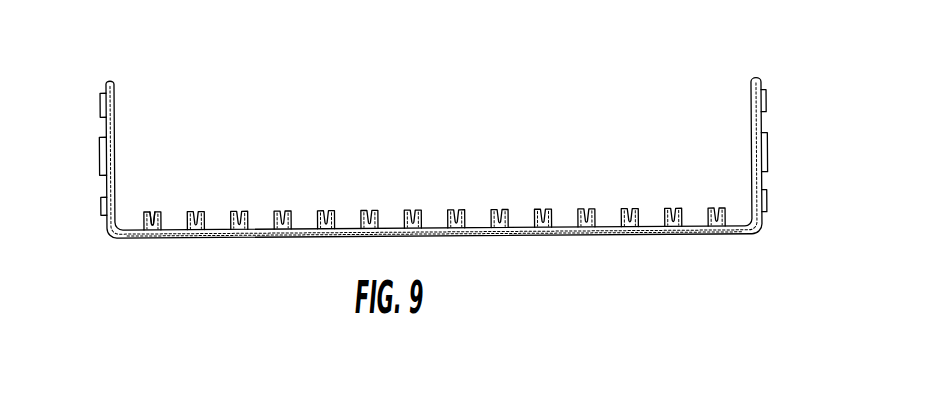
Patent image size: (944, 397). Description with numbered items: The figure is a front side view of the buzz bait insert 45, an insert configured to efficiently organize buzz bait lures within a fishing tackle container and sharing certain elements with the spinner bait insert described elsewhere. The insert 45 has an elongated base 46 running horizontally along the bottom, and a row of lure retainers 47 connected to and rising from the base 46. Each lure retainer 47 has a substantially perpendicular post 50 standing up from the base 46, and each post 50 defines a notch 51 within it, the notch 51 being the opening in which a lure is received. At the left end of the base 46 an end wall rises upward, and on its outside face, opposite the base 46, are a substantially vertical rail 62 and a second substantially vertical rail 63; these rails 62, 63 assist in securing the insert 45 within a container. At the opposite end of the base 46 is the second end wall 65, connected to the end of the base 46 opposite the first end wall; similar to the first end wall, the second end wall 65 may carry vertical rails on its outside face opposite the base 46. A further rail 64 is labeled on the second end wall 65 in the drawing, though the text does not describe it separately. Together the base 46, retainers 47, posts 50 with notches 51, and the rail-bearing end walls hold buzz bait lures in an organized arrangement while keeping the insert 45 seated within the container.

The buzz bait insert 45 is at (596, 126).
The base 46 is at (497, 237).
The lure retainer 47 is at (448, 210).
The post 50 is at (158, 227).
The notch 51 is at (153, 212).
The substantially vertical rail 62 is at (100, 158).
The second substantially vertical rail 63 is at (101, 101).
The right side upper tab 64 is at (767, 102).
The second end wall 65 is at (768, 155).